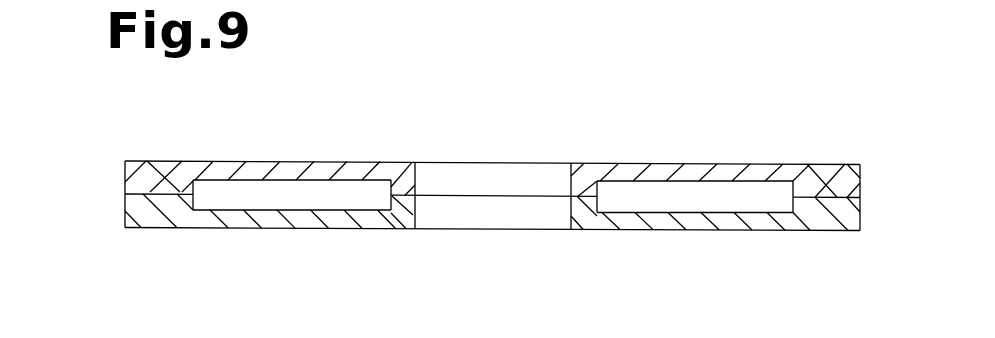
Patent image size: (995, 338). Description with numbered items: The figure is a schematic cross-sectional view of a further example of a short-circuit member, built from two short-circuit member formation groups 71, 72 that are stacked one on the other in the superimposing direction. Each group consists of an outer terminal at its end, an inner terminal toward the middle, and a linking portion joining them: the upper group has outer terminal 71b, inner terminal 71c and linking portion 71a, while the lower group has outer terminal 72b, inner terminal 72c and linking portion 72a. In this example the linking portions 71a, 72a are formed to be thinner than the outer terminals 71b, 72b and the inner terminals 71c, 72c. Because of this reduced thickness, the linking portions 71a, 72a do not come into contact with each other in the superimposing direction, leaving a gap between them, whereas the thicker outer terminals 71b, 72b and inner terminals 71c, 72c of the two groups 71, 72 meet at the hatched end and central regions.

The short-circuit member formation group 71 is at (123, 172).
The short-circuit member formation group 72 is at (123, 206).
The linking portion 71a is at (293, 160).
The outer terminal 71b is at (160, 160).
The inner terminal 71c is at (403, 175).
The linking portion 72a is at (290, 222).
The outer terminal 72b is at (158, 219).
The inner terminal 72c is at (402, 215).